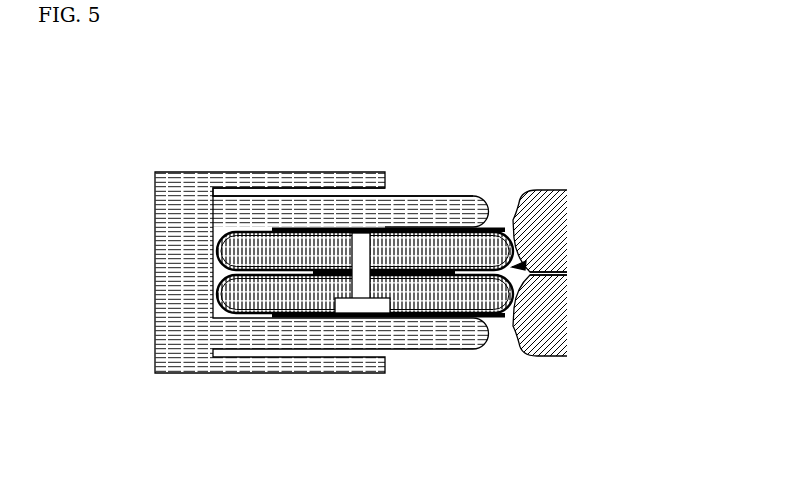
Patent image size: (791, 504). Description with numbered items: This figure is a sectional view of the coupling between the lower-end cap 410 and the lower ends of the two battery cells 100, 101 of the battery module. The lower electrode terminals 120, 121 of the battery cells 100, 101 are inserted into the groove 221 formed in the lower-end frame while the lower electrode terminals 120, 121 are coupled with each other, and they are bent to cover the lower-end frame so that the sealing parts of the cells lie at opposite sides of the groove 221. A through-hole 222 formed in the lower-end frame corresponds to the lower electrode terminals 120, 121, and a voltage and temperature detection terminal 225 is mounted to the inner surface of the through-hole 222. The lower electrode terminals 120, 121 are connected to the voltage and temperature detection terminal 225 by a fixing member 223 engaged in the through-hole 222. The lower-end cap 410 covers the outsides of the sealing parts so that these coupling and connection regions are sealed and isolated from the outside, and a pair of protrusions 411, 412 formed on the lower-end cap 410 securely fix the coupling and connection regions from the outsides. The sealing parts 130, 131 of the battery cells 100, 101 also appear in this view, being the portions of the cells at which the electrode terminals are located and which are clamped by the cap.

The battery cell 100 is at (547, 190).
The battery cell 101 is at (553, 358).
The lower electrode terminal 120 is at (230, 232).
The lower electrode terminal 121 is at (218, 308).
The upper-end sealing part 130 is at (448, 227).
The upper-end sealing part 131 is at (477, 342).
The groove 221 is at (525, 265).
The through-hole 222 is at (383, 196).
The fixing member 223 is at (370, 305).
The voltage and temperature detection terminal 225 is at (368, 260).
The lower-end cap 410 is at (155, 236).
The protrusion 411 is at (425, 197).
The protrusion 412 is at (452, 347).